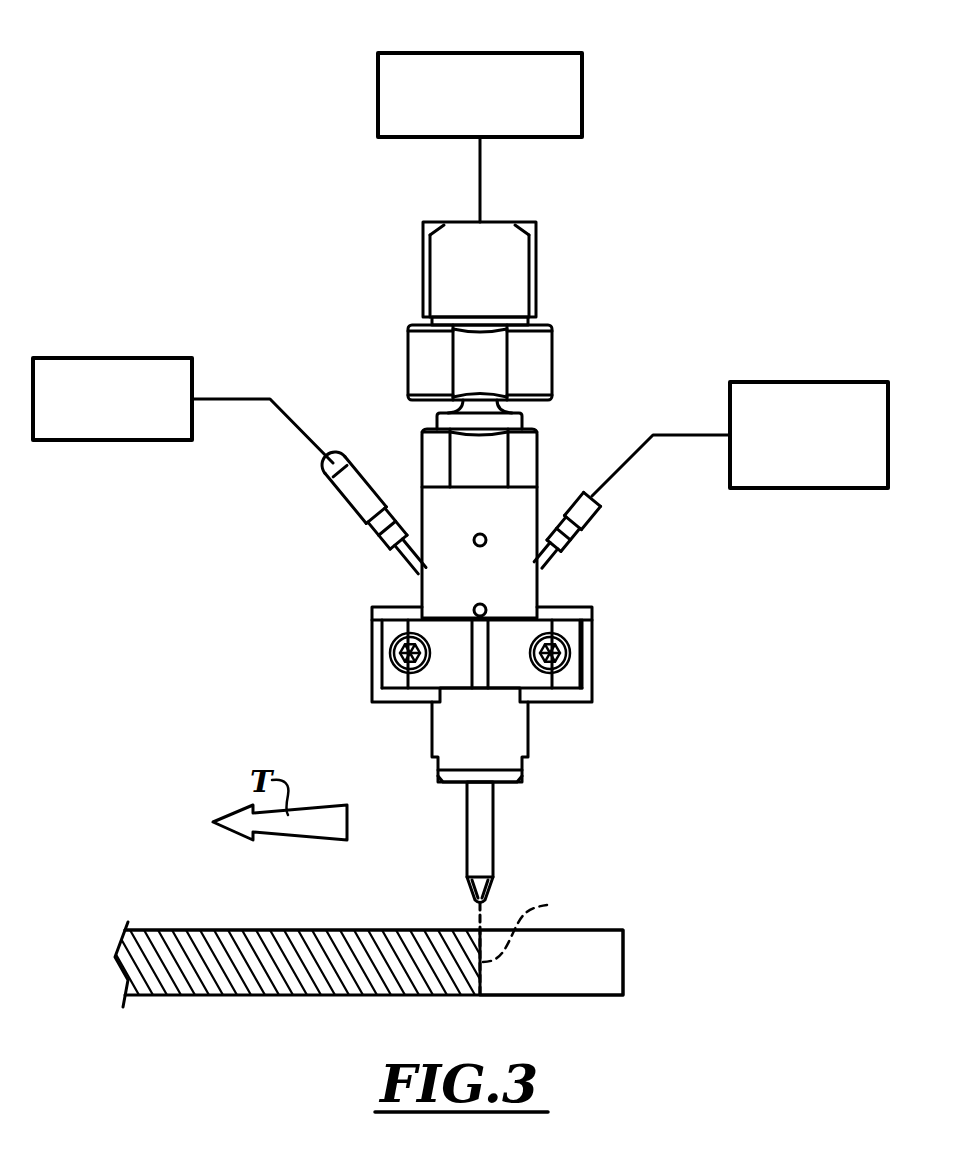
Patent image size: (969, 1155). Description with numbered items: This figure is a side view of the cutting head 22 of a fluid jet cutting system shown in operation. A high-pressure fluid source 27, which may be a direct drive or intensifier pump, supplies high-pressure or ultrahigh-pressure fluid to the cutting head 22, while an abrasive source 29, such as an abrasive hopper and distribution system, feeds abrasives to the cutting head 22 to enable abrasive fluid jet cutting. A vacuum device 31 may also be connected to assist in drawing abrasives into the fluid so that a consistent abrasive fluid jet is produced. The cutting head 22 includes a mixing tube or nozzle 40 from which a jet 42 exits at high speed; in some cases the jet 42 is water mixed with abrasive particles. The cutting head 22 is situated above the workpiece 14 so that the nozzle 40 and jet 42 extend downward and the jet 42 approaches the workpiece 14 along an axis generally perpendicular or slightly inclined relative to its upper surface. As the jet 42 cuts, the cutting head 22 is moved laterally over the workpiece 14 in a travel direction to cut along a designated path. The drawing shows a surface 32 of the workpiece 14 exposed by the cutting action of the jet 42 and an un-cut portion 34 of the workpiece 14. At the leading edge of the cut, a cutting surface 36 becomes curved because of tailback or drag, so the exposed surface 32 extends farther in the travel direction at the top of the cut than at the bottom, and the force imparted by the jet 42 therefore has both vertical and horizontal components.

The workpiece 14 is at (378, 942).
The cutting head 22 is at (538, 588).
The high-pressure fluid source 27 is at (420, 53).
The abrasive source 29 is at (77, 358).
The vacuum device 31 is at (773, 382).
The exposed surface 32 is at (602, 968).
The un-cut portion 34 is at (254, 930).
The cutting surface 36 is at (472, 952).
The nozzle 40 is at (485, 832).
The jet 42 is at (533, 927).